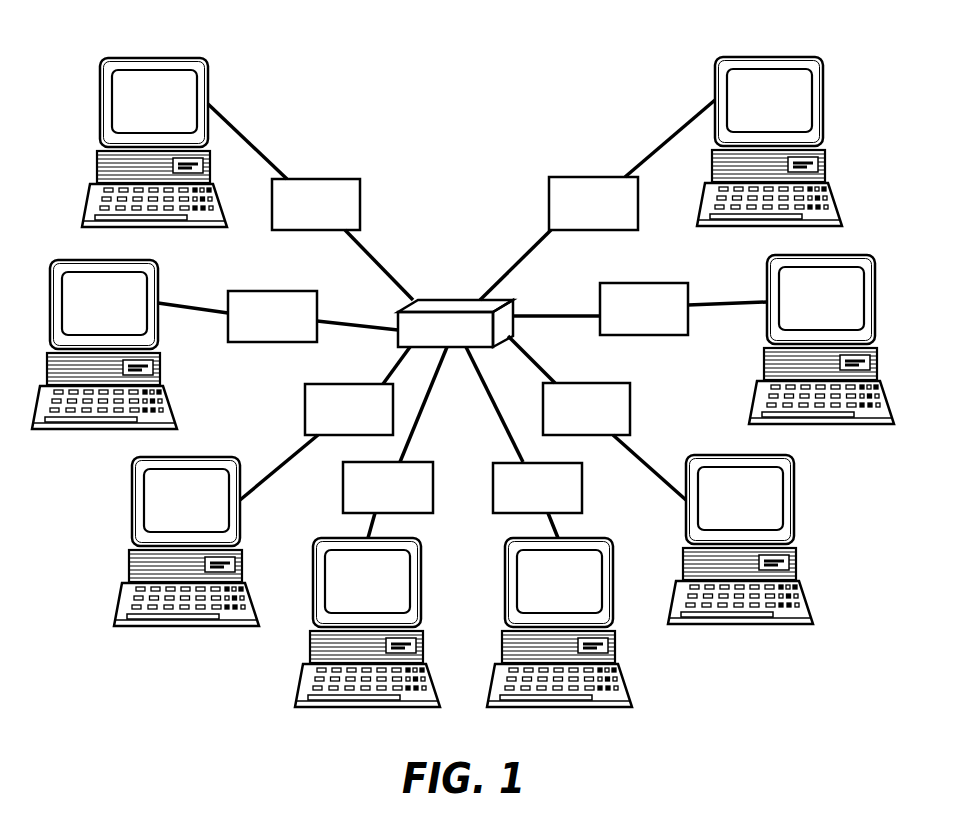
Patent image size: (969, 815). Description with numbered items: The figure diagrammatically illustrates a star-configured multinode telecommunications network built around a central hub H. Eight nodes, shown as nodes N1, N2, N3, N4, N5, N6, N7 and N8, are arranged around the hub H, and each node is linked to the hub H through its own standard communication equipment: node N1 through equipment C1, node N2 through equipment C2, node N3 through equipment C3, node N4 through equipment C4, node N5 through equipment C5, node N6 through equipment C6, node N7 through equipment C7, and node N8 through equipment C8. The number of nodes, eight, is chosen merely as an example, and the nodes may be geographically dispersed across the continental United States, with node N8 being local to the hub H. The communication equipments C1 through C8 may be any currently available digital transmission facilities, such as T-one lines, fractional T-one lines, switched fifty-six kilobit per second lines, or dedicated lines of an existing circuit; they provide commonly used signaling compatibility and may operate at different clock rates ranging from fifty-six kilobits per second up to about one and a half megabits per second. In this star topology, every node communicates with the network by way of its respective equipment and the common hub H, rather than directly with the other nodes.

The hub H is at (445, 306).
The communication equipment C1 is at (335, 179).
The communication equipment C2 is at (290, 291).
The communication equipment C3 is at (323, 384).
The communication equipment C4 is at (412, 462).
The communication equipment C5 is at (582, 496).
The communication equipment C6 is at (607, 383).
The communication equipment C7 is at (637, 283).
The communication equipment C8 is at (579, 177).
The node N1 is at (182, 58).
The node N2 is at (70, 260).
The node N3 is at (200, 457).
The node N4 is at (338, 538).
The node N5 is at (508, 538).
The node N6 is at (712, 455).
The node N7 is at (855, 255).
The node N8 is at (799, 57).